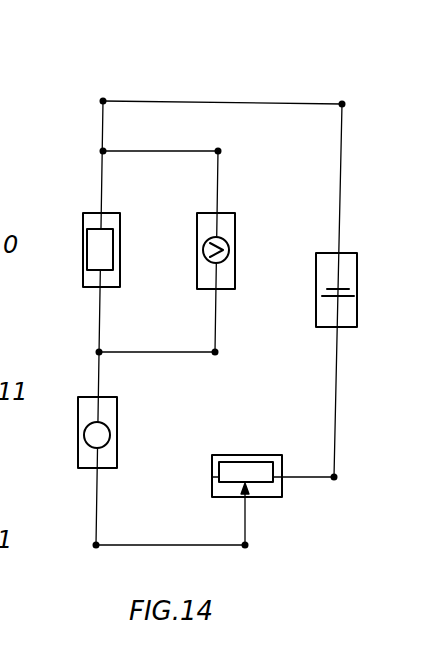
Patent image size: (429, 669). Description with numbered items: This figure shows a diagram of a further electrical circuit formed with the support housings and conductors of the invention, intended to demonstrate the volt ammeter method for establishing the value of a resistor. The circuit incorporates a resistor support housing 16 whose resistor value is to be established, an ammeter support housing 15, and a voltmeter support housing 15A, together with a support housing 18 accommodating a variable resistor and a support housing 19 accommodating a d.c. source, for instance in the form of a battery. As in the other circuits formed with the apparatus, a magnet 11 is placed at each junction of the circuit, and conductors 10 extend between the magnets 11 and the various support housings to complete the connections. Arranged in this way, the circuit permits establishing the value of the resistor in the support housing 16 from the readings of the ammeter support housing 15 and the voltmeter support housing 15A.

The conductor 10 is at (215, 101).
The magnet 11 is at (103, 101).
The ammeter support housing 15 is at (78, 435).
The voltmeter support housing 15A is at (235, 243).
The resistor support housing 16 is at (83, 248).
The support housing accommodating a variable resistor 18 is at (223, 455).
The support housing accommodating a d.c. source 19 is at (352, 268).